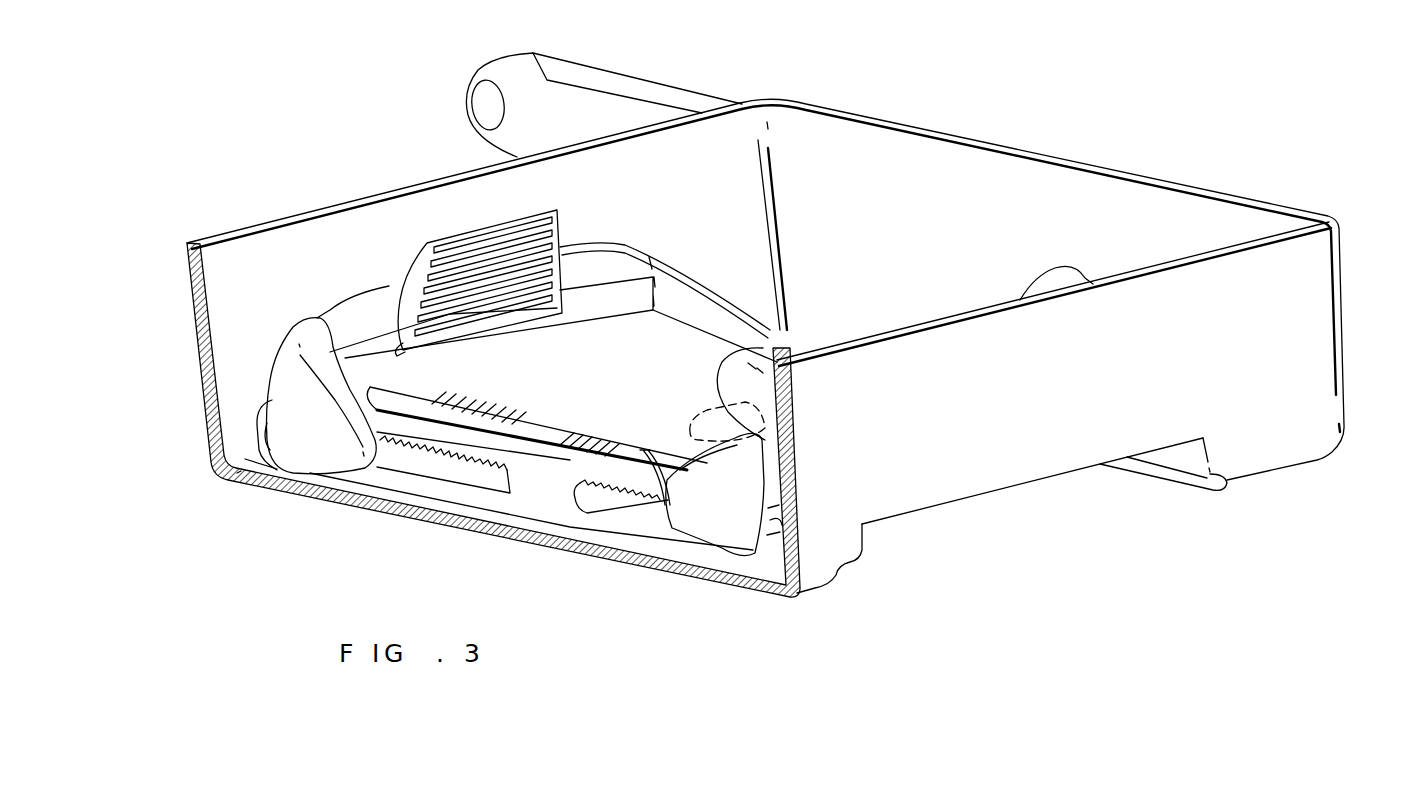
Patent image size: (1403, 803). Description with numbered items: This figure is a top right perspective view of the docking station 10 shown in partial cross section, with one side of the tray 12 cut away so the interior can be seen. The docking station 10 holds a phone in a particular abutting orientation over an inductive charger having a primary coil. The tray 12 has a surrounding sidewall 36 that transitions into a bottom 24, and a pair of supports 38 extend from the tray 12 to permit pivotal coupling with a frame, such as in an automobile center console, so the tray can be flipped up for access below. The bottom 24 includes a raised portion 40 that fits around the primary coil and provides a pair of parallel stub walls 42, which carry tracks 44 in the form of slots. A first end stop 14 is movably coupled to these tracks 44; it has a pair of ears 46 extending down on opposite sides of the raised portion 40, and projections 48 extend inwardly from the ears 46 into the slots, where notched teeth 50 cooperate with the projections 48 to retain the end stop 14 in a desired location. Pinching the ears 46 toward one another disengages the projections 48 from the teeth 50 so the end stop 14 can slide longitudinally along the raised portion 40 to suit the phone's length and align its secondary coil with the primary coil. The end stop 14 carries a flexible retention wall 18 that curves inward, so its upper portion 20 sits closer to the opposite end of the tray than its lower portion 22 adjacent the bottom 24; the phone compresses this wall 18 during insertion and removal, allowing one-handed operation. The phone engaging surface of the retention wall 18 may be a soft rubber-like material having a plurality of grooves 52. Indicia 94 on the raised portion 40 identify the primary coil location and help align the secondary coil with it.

The docking station 10 is at (1128, 114).
The tray 12 is at (1277, 433).
The first end stop 14 is at (383, 283).
The flexible retention wall 18 is at (560, 240).
The upper portion 20 is at (498, 223).
The lower portion 22 is at (520, 318).
The bottom 24 is at (335, 490).
The surrounding sidewall 36 is at (388, 225).
The supports 38 is at (620, 88).
The raised portion 40 is at (393, 414).
The stub walls 42 is at (533, 500).
The tracks 44 is at (437, 467).
The ears 46 is at (300, 450).
The projections 48 is at (796, 545).
The notched teeth 50 is at (645, 455).
The grooves 52 is at (567, 297).
The indicia 94 is at (707, 413).